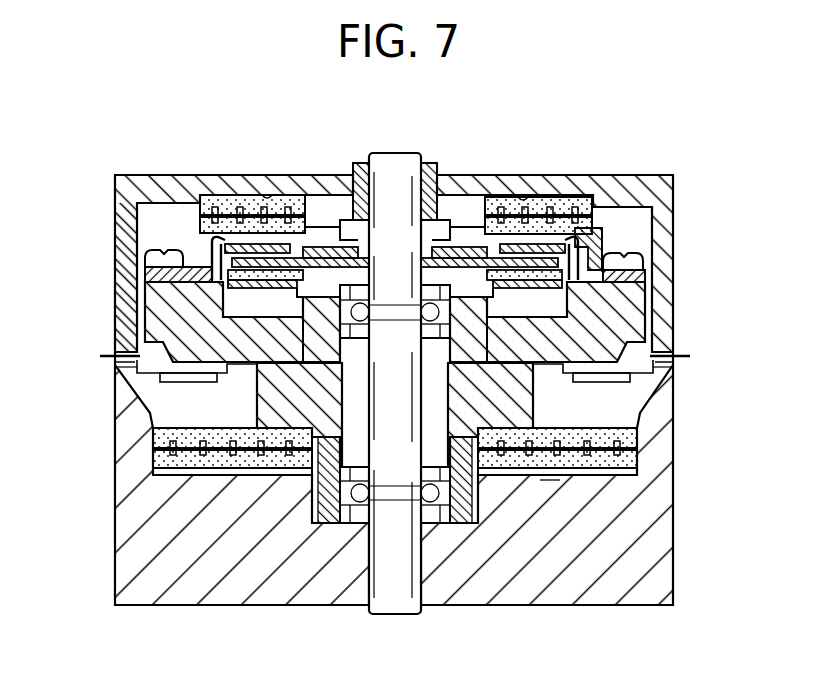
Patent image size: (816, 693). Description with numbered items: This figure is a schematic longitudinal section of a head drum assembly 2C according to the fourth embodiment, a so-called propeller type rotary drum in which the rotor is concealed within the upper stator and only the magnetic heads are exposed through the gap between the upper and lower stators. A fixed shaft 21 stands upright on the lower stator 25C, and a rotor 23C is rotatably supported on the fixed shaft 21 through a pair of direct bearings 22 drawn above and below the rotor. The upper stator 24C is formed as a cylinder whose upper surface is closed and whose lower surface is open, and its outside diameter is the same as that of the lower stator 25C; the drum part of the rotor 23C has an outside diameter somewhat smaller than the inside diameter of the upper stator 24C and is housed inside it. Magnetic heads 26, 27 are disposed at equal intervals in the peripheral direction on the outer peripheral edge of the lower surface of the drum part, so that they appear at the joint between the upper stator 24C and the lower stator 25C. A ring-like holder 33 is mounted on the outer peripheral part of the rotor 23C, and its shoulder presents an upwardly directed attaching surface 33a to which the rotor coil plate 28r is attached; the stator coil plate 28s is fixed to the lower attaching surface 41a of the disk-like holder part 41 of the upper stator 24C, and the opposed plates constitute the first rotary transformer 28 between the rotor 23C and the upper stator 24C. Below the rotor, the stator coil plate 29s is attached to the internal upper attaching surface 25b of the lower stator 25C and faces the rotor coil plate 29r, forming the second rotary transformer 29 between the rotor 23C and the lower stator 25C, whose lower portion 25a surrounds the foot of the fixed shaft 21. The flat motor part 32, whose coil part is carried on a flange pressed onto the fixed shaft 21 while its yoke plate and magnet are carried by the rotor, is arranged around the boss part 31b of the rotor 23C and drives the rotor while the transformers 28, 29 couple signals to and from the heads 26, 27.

The head drum assembly 2C is at (657, 158).
The fixed shaft 21 is at (398, 168).
The bearings 22 is at (449, 515).
The rotor 23C is at (633, 310).
The upper stator 24C is at (752, 196).
The lower housing 25C is at (752, 556).
The shaft bore 25a is at (369, 588).
The attaching surface 25b is at (552, 468).
The magnetic heads 26 is at (113, 357).
The magnetic heads 27 is at (379, 387).
The first rotary transformer 28 is at (375, 172).
The stator coil plate 28s is at (215, 196).
The rotor coil plate 28r is at (227, 224).
The second rotary transformer 29 is at (441, 538).
The stator coil plate 29s is at (248, 460).
The rotor coil plate 29r is at (188, 440).
The yoke plate 31b is at (530, 411).
The motor part 32 is at (323, 278).
The ring-like holder 33 is at (600, 277).
The attaching surface 33a is at (593, 220).
The holder part 41 is at (468, 182).
The attaching surface 41a is at (523, 200).